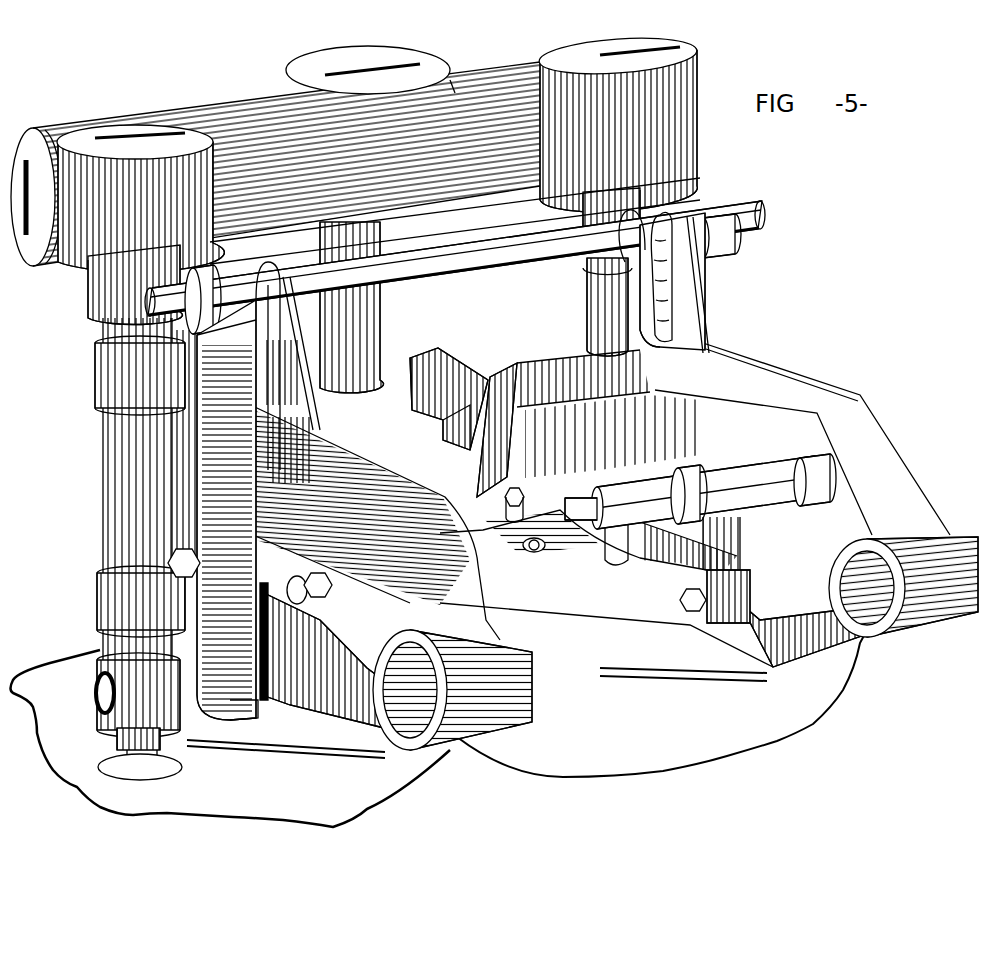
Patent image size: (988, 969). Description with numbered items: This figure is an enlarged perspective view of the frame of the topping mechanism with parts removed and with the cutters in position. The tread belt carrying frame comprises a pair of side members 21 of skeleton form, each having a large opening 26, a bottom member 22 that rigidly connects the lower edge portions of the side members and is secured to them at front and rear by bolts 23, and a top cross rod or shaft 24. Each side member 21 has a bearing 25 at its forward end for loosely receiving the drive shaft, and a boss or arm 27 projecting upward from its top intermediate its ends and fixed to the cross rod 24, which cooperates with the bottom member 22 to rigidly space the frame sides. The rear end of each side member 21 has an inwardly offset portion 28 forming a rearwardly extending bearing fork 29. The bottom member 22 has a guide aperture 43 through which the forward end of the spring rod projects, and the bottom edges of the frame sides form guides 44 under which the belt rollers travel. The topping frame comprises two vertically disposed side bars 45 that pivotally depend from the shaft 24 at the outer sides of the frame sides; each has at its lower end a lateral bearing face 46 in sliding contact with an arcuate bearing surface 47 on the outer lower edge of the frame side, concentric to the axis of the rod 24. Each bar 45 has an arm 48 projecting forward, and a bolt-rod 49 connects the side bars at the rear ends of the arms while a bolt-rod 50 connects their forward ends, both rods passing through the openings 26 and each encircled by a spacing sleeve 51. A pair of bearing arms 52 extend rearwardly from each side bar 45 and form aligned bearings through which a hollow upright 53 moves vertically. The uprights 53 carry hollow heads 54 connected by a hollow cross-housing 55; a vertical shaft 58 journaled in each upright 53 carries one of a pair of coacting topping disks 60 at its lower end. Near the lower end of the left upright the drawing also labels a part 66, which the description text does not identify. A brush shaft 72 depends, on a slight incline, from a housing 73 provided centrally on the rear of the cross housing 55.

The side member 21 is at (352, 452).
The bottom member 22 is at (587, 625).
The bolt 23 is at (517, 490).
The top cross rod or shaft 24 is at (500, 270).
The bearing 25 is at (524, 724).
The opening 26 is at (582, 437).
The boss or arm 27 is at (650, 307).
The inwardly offset portion 28 is at (493, 398).
The bearing fork 29 is at (447, 383).
The guide aperture 43 is at (535, 552).
The guide 44 is at (373, 748).
The side bar 45 is at (740, 318).
The lateral bearing face 46 is at (256, 716).
The bearing surface 47 is at (290, 712).
The arm 48 is at (285, 528).
The bolt-rod 49 is at (577, 490).
The bolt-rod 50 is at (625, 562).
The spacing sleeve 51 is at (680, 465).
The bearing arm 52 is at (95, 378).
The hollow upright 53 is at (118, 481).
The hollow head 54 is at (377, 153).
The cross-housing 55 is at (275, 164).
The vertical shaft 58 is at (130, 737).
The topping disk 60 is at (368, 797).
The hole 66 is at (95, 682).
The shaft 72 is at (380, 323).
The housing 73 is at (370, 70).